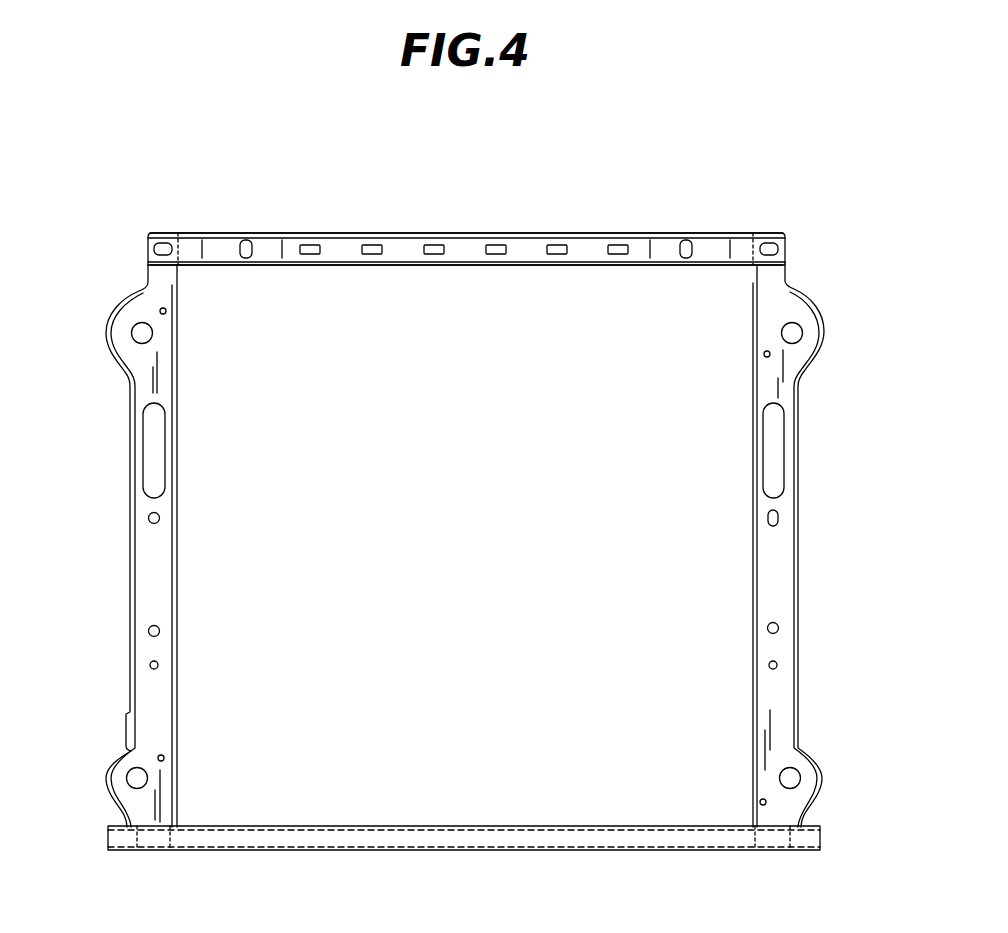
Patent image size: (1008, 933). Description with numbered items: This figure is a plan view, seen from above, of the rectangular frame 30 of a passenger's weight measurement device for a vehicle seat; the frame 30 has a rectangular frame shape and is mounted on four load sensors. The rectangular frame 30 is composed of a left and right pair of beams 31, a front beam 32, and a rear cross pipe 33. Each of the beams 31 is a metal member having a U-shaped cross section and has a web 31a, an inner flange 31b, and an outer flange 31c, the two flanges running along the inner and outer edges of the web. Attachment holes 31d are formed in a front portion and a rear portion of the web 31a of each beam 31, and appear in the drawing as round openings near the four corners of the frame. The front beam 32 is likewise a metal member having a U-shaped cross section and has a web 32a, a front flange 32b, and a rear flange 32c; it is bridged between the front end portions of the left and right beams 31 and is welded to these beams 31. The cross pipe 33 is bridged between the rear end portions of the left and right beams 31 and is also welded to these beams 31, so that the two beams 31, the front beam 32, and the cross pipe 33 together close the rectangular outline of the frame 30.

The rectangular frame 30 is at (750, 200).
The beam 31 is at (160, 573).
The web 31a is at (152, 600).
The inner flange 31b is at (172, 648).
The outer flange 31c is at (133, 627).
The attachment hole 31d is at (137, 330).
The front beam 32 is at (340, 240).
The web 32a is at (460, 252).
The front flange 32b is at (493, 234).
The rear flange 32c is at (523, 265).
The cross pipe 33 is at (443, 835).